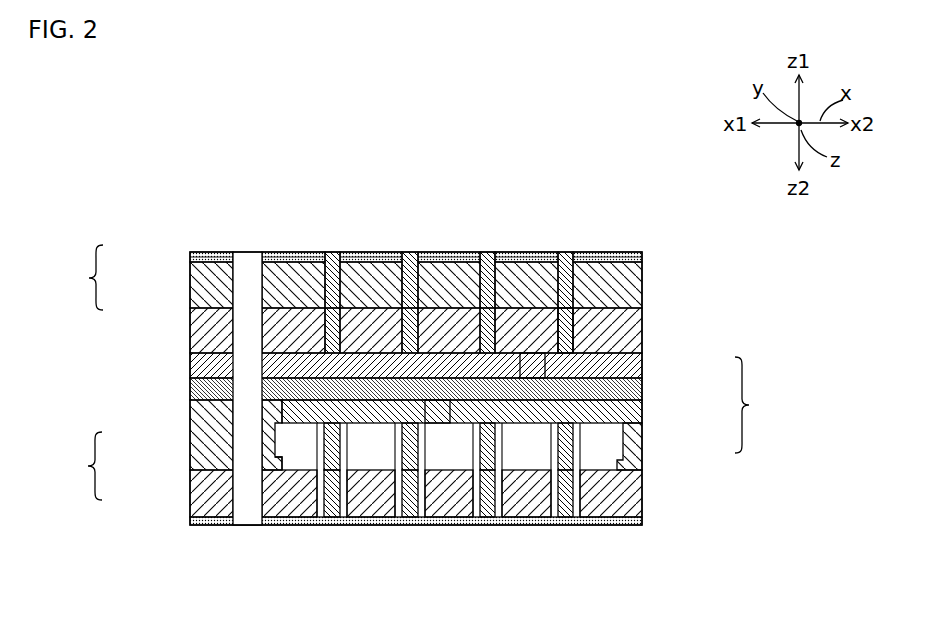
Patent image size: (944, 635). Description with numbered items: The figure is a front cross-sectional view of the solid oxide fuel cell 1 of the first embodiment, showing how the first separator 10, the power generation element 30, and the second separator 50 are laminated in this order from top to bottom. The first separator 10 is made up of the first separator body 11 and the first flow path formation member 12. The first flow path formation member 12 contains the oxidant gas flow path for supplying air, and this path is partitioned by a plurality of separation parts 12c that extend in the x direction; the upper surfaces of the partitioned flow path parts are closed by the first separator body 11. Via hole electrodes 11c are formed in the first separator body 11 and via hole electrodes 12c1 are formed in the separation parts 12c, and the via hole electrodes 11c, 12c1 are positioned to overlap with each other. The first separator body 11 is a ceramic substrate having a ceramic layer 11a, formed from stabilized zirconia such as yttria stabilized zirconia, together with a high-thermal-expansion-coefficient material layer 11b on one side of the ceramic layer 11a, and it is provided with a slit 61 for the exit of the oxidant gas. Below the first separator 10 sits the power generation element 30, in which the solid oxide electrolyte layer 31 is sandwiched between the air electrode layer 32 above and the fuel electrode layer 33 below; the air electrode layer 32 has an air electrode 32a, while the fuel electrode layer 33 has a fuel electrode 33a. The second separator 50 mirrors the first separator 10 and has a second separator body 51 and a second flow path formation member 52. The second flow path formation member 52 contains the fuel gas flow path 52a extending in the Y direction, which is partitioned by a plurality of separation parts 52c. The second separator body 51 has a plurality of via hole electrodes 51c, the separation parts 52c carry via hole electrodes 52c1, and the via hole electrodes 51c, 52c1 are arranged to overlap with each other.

The solid oxide fuel cell 1 is at (630, 156).
The first separator 10 is at (82, 277).
The first separator body 11 is at (188, 286).
The ceramic layer 11a is at (643, 277).
The high-thermal-expansion-coefficient material layer 11b is at (610, 253).
The via hole electrodes 11c is at (565, 260).
The first flow path formation member 12 is at (188, 324).
The separation parts 12c is at (647, 322).
The via hole electrodes 12c1 is at (577, 340).
The power generation element 30 is at (758, 405).
The solid oxide electrolyte layer 31 is at (643, 390).
The air electrode layer 32 is at (647, 367).
The air electrode 32a is at (532, 360).
The fuel electrode layer 33 is at (649, 410).
The fuel electrode 33a is at (437, 425).
The second separator 50 is at (77, 466).
The second separator body 51 is at (190, 493).
The via hole electrodes 51c is at (583, 492).
The second flow path formation member 52 is at (190, 453).
The fuel gas flow path 52a is at (318, 448).
The separation parts 52c is at (597, 447).
The via hole electrodes 52c1 is at (578, 455).
The slit 61 is at (252, 280).